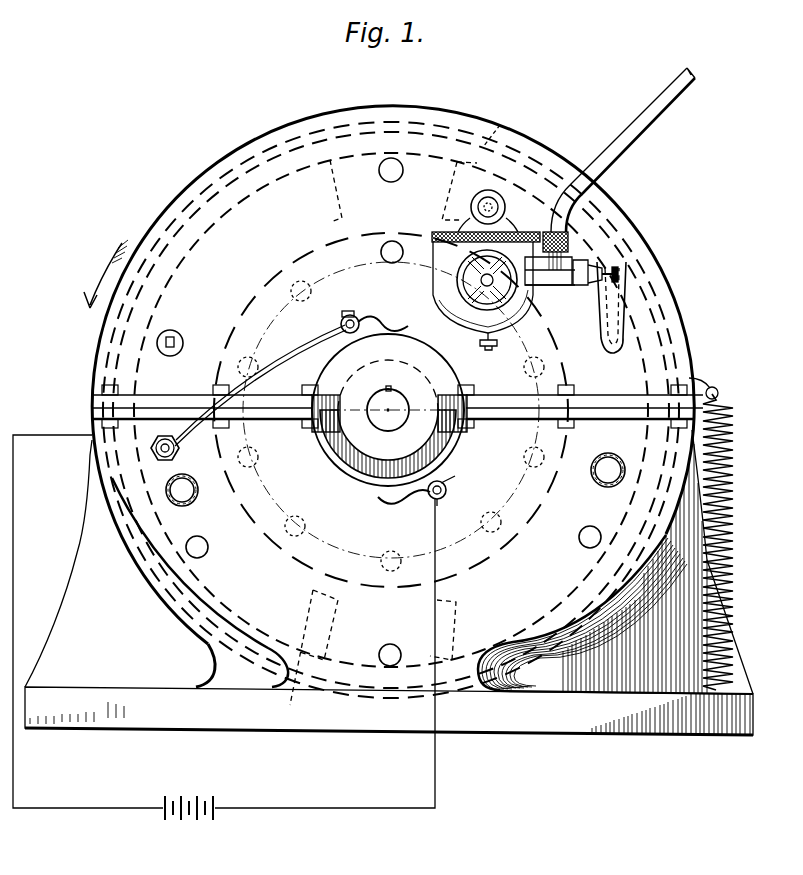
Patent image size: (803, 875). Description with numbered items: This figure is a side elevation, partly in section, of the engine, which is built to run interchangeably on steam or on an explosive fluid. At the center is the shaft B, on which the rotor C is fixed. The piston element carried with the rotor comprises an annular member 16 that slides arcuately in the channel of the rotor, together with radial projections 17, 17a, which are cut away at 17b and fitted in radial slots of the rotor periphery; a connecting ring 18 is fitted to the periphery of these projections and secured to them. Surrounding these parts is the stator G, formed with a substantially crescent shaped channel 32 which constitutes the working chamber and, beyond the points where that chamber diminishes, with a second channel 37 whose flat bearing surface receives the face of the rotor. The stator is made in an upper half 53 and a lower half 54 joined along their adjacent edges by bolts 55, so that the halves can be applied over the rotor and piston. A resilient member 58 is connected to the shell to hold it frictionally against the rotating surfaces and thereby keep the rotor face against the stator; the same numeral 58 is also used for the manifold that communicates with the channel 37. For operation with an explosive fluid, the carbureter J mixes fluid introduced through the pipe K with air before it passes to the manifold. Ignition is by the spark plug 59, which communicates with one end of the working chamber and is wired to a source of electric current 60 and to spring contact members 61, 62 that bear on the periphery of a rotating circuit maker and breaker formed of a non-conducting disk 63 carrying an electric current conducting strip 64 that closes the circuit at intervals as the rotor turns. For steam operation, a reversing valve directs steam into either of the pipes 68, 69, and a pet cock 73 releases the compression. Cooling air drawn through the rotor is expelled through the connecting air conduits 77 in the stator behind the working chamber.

The stator G is at (90, 466).
The lower half of stator 54 is at (90, 506).
The upper half of stator 53 is at (96, 346).
The crescent shaped channel 32 is at (185, 605).
The rotor C is at (266, 205).
The connecting ring 18 is at (364, 150).
The annular member 16 is at (466, 592).
The radial projection 17 is at (417, 207).
The cut away portion of radial projection 17b is at (500, 125).
The radial projection 17a is at (438, 632).
The connecting air conduits 77 is at (387, 182).
The pet cock 73 is at (178, 330).
The pipe 69 is at (195, 503).
The pipe 68 is at (598, 486).
The bolts 55 is at (312, 428).
The disk 63 is at (352, 470).
The electric current conducting strip 64 is at (458, 450).
The shaft B is at (391, 400).
The spring contact member 61 is at (366, 320).
The spring contact member 62 is at (411, 503).
The spark plug 59 is at (166, 432).
The carbureter J is at (450, 284).
The pipe K is at (628, 136).
The second channel 37 is at (655, 350).
The resilient member 58 is at (735, 548).
The source of electric current 60 is at (192, 814).